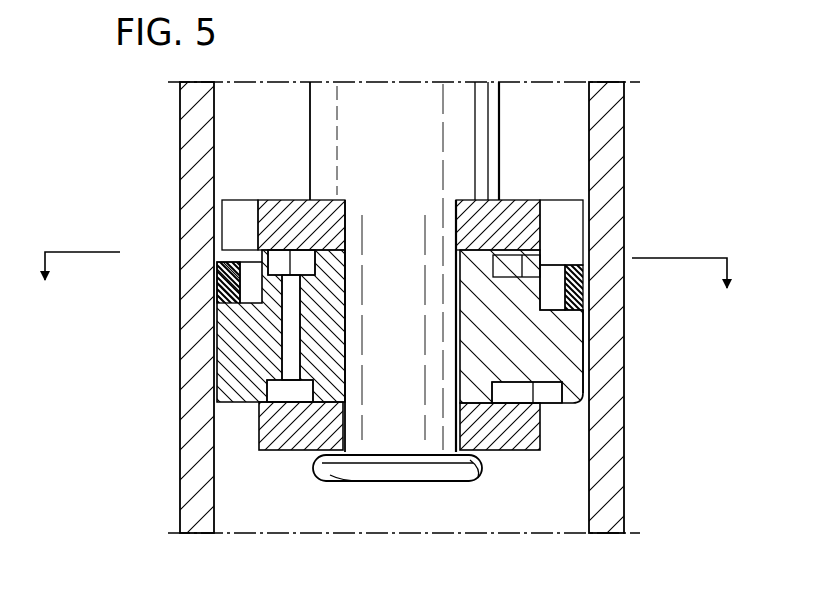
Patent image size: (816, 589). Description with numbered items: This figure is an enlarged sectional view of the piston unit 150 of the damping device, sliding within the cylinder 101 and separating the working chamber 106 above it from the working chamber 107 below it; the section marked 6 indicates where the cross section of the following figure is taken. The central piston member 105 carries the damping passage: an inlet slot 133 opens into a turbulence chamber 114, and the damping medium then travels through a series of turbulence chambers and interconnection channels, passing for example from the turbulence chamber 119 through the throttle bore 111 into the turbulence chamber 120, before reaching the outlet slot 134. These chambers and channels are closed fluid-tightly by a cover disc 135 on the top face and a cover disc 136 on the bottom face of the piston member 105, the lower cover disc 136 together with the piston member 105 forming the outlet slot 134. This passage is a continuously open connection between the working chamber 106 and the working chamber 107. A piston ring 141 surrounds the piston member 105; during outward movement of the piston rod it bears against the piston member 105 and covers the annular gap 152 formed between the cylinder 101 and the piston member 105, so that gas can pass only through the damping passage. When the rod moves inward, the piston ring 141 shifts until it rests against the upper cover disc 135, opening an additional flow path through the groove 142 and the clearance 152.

The cylinder 101 is at (608, 133).
The piston member 105 is at (490, 322).
The working chamber 106 is at (548, 100).
The working chamber 107 is at (565, 518).
The throttle bore 111 is at (275, 335).
The turbulence chamber 114 is at (487, 262).
The turbulence chamber 119 is at (270, 262).
The turbulence chamber 120 is at (297, 393).
The inlet slot 133 is at (545, 258).
The outlet slot 134 is at (552, 400).
The cover disc 135 is at (522, 222).
The cover disc 136 is at (505, 433).
The piston ring 141 is at (575, 272).
The groove 142 is at (553, 300).
The piston unit 150 is at (228, 372).
The annular gap 152 is at (583, 355).
The section line VI-VI 6 is at (386, 264).